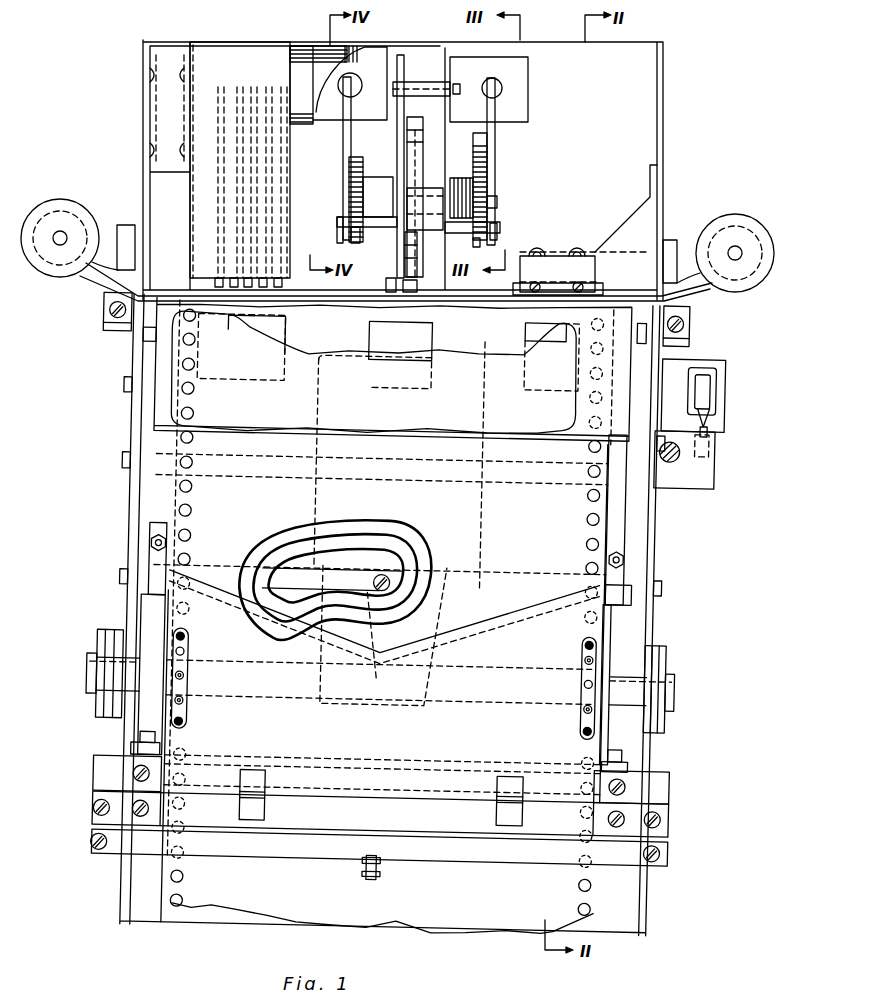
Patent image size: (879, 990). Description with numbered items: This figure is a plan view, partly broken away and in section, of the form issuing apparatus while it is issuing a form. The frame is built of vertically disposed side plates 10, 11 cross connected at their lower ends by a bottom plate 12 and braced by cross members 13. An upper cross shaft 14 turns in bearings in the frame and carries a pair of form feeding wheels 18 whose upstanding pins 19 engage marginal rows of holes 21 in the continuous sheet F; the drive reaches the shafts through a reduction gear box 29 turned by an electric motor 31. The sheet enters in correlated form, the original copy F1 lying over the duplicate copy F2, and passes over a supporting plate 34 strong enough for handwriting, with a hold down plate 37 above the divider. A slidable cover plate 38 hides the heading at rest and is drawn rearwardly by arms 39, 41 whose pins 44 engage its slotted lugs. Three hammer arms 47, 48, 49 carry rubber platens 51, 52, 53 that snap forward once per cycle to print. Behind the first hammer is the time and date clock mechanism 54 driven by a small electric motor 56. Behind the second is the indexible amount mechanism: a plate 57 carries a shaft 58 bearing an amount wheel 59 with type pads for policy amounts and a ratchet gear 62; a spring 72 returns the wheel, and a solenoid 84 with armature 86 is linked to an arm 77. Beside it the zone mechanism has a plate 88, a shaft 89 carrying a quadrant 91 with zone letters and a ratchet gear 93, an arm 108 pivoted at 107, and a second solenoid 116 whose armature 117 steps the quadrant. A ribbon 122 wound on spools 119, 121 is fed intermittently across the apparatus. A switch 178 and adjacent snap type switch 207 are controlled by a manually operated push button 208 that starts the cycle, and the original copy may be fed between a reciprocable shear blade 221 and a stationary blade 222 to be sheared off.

The side plate 10 is at (143, 193).
The side plate 11 is at (663, 168).
The bottom plate 12 is at (645, 125).
The cross member 13 is at (404, 571).
The upper cross shaft 14 is at (152, 676).
The form feeding wheel 18 is at (593, 725).
The pin 19 is at (590, 683).
The hole 21 is at (598, 907).
The reduction gear box 29 is at (406, 708).
The electric motor 31 is at (318, 493).
The supporting plate 34 is at (384, 552).
The hold down plate 37 is at (374, 760).
The cover plate 38 is at (575, 434).
The arm 39 is at (152, 351).
The arm 41 is at (640, 352).
The pin 44 is at (646, 338).
The hammer arm 47 is at (287, 342).
The hammer arm 48 is at (425, 343).
The hammer arm 49 is at (535, 346).
The rubber platen 51 is at (288, 326).
The rubber platen 52 is at (369, 329).
The rubber platen 53 is at (528, 330).
The time and date clock mechanism 54 is at (293, 192).
The electric motor 56 is at (303, 75).
The plate 57 is at (453, 103).
The shaft 58 is at (498, 202).
The amount wheel 59 is at (413, 117).
The ratchet gear 62 is at (483, 172).
The spring 72 is at (458, 178).
The arm 77 is at (495, 110).
The solenoid 84 is at (530, 120).
The armature 86 is at (500, 88).
The plate 88 is at (397, 133).
The shaft 89 is at (352, 200).
The quadrant 91 is at (385, 283).
The ratchet gear 93 is at (363, 170).
The pivot 107 is at (337, 227).
The arm 108 is at (343, 133).
The second solenoid 116 is at (378, 60).
The armature 117 is at (357, 90).
The spool 119 is at (68, 203).
The spool 121 is at (742, 218).
The ribbon 122 is at (700, 295).
The switch 178 is at (720, 396).
The snap type switch 207 is at (679, 371).
The push button 208 is at (682, 457).
The shear blade 221 is at (110, 776).
The stationary blade 222 is at (100, 812).
The continuous sheet F is at (278, 905).
The original copy F1 is at (364, 522).
The duplicate copy F2 is at (332, 548).